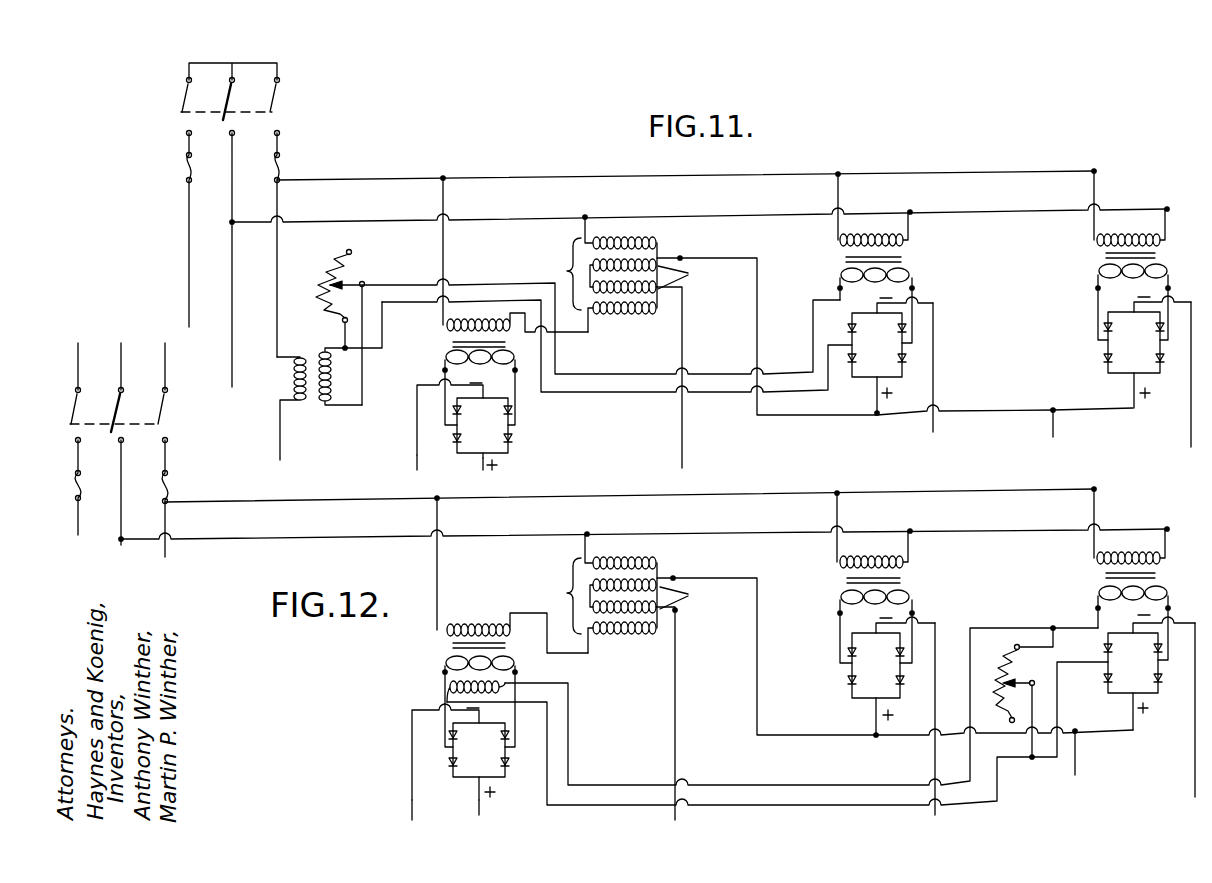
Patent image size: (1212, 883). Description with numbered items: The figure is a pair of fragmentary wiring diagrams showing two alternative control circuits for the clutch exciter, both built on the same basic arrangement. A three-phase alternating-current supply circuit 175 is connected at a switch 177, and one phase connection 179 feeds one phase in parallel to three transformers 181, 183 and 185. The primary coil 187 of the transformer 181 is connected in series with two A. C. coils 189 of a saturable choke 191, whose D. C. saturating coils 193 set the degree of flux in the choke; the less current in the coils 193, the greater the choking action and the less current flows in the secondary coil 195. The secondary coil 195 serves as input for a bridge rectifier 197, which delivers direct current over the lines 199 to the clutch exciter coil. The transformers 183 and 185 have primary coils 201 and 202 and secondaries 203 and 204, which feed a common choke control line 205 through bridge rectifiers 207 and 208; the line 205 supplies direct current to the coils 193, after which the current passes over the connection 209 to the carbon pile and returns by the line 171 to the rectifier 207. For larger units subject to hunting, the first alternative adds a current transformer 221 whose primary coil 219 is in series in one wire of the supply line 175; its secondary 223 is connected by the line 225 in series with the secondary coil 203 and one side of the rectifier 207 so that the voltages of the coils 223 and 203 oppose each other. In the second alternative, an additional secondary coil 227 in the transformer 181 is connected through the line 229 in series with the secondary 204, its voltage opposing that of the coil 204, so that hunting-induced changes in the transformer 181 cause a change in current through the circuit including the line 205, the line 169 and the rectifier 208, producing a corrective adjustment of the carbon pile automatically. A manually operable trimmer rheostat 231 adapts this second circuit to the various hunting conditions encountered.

In FIG. 11, the circuit line 169 is at (1055, 425).
In FIG. 12, the circuit line 169 is at (1077, 773).
In FIG. 11, the line 171 is at (935, 350).
In FIG. 12, the line 171 is at (935, 672).
In FIG. 11, the three-phase A. C. supply circuit 175 is at (232, 67).
In FIG. 12, the three-phase A. C. supply circuit 175 is at (165, 365).
In FIG. 11, the switch 177 is at (272, 112).
In FIG. 12, the switch 177 is at (162, 424).
In FIG. 11, the phase connection 179 is at (411, 218).
In FIG. 12, the phase connection 179 is at (364, 537).
In FIG. 11, the transformer 181 is at (448, 344).
In FIG. 12, the transformer 181 is at (448, 644).
In FIG. 11, the transformer 183 is at (908, 256).
In FIG. 12, the transformer 183 is at (908, 578).
In FIG. 11, the transformer 185 is at (1104, 254).
In FIG. 12, the transformer 185 is at (1106, 573).
In FIG. 11, the primary coil 187 is at (478, 316).
In FIG. 12, the primary coil 187 is at (478, 614).
In FIG. 11, the A. C. coils 189 is at (625, 242).
In FIG. 12, the A. C. coils 189 is at (624, 562).
In FIG. 11, the saturable choke 191 is at (553, 274).
In FIG. 12, the saturable choke 191 is at (549, 596).
In FIG. 11, the D. C. saturating coils 193 is at (690, 277).
In FIG. 12, the D. C. saturating coils 193 is at (688, 598).
In FIG. 11, the secondary coil 195 is at (446, 362).
In FIG. 12, the secondary coil 195 is at (445, 668).
In FIG. 11, the bridge rectifier 197 is at (498, 399).
In FIG. 12, the bridge rectifier 197 is at (493, 722).
In FIG. 11, the lines 199 is at (480, 464).
In FIG. 12, the lines 199 is at (479, 801).
In FIG. 11, the primary coil 201 is at (873, 210).
In FIG. 12, the primary coil 201 is at (872, 530).
In FIG. 11, the primary coil 202 is at (1129, 208).
In FIG. 12, the primary coil 202 is at (1129, 526).
In FIG. 11, the secondary coil 203 is at (842, 277).
In FIG. 12, the secondary coil 203 is at (842, 598).
In FIG. 11, the secondary coil 204 is at (1096, 275).
In FIG. 12, the secondary coil 204 is at (1098, 594).
In FIG. 11, the choke control line 205 is at (758, 300).
In FIG. 12, the choke control line 205 is at (757, 642).
In FIG. 11, the bridge rectifier 207 is at (866, 370).
In FIG. 12, the bridge rectifier 207 is at (870, 683).
In FIG. 11, the bridge rectifier 208 is at (1118, 352).
In FIG. 12, the bridge rectifier 208 is at (1118, 683).
In FIG. 11, the connection 209 is at (683, 328).
In FIG. 12, the connection 209 is at (675, 643).
In FIG. 11, the primary coil 219 is at (295, 384).
In FIG. 11, the current transformer 221 is at (339, 363).
In FIG. 11, the secondary 223 is at (350, 264).
In FIG. 11, the line 225 is at (630, 398).
In FIG. 12, the additional secondary coil 227 is at (447, 688).
In FIG. 12, the line 229 is at (620, 805).
In FIG. 12, the trimmer rheostat 231 is at (1024, 692).